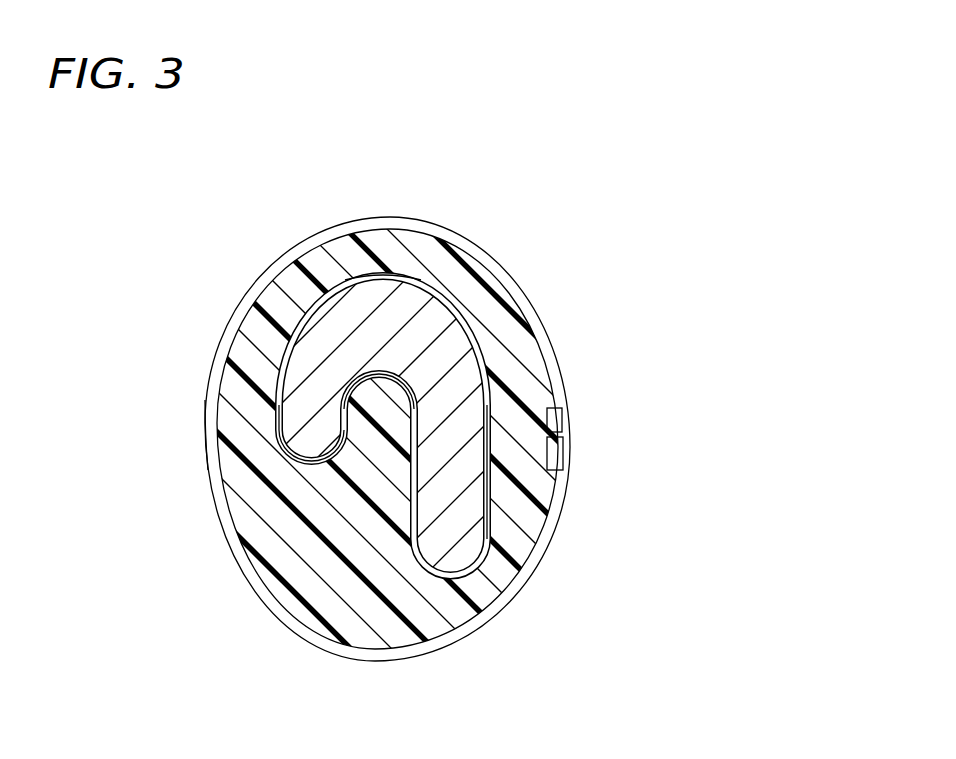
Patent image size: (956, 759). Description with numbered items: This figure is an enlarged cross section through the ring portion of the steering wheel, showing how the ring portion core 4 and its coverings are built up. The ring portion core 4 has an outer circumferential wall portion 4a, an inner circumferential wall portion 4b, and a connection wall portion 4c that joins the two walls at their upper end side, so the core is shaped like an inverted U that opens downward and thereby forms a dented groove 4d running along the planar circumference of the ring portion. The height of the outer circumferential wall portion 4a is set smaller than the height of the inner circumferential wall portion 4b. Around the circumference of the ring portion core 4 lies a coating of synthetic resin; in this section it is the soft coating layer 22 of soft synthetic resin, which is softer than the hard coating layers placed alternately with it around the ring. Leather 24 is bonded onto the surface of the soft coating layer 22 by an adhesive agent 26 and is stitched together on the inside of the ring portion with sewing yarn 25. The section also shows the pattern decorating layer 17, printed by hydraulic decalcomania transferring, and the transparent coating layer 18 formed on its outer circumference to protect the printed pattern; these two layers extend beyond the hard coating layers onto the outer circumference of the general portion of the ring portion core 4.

The ring portion core 4 is at (512, 158).
The outer circumferential wall portion 4a is at (317, 407).
The inner circumferential wall portion 4b is at (443, 423).
The connection wall portion 4c is at (385, 316).
The dented groove 4d is at (378, 378).
The soft coating layer 22 is at (527, 350).
The leather 24 is at (223, 305).
The sewing yarn 25 is at (560, 458).
The adhesive agent 26 is at (212, 430).
The coating layer 18 is at (292, 470).
The pattern decorating layer 17 is at (313, 463).